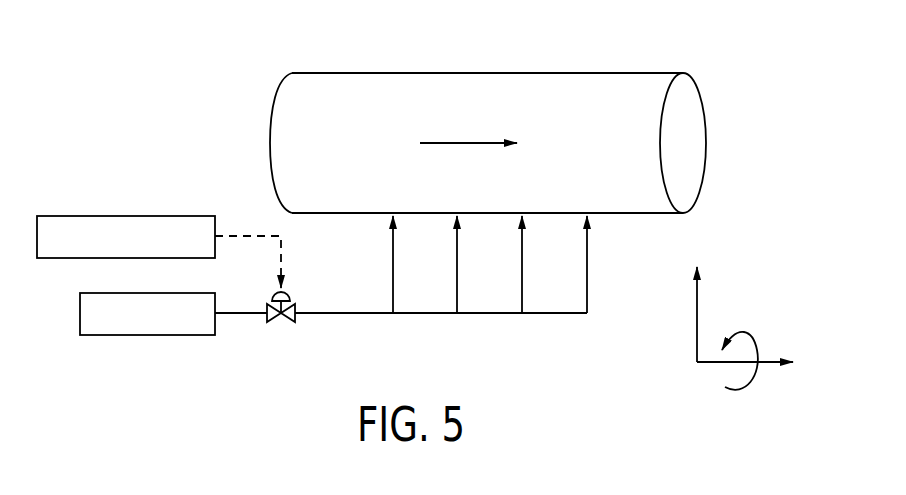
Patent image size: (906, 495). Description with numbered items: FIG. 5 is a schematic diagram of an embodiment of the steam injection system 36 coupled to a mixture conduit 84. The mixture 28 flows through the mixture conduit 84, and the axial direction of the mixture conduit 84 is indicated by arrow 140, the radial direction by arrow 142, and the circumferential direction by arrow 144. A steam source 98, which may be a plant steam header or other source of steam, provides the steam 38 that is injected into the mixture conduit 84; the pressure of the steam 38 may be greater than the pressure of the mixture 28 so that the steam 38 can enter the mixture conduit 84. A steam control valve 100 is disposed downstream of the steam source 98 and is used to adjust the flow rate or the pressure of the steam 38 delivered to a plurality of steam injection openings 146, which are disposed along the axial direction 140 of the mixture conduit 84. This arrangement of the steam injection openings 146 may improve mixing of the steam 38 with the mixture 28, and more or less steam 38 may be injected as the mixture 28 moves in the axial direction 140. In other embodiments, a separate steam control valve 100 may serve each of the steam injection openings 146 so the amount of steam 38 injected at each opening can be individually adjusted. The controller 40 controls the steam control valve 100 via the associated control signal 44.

The mixture 28 is at (463, 143).
The steam injection system 36 is at (195, 160).
The steam 38 is at (340, 315).
The controller 40 is at (80, 216).
The control signal 44 is at (246, 235).
The mixture conduit 84 is at (490, 73).
The steam source 98 is at (150, 336).
The steam control valve 100 is at (284, 324).
The axial direction 140 is at (714, 363).
The radial direction 142 is at (696, 319).
The circumferential direction 144 is at (748, 336).
The steam injection openings 146 is at (398, 217).